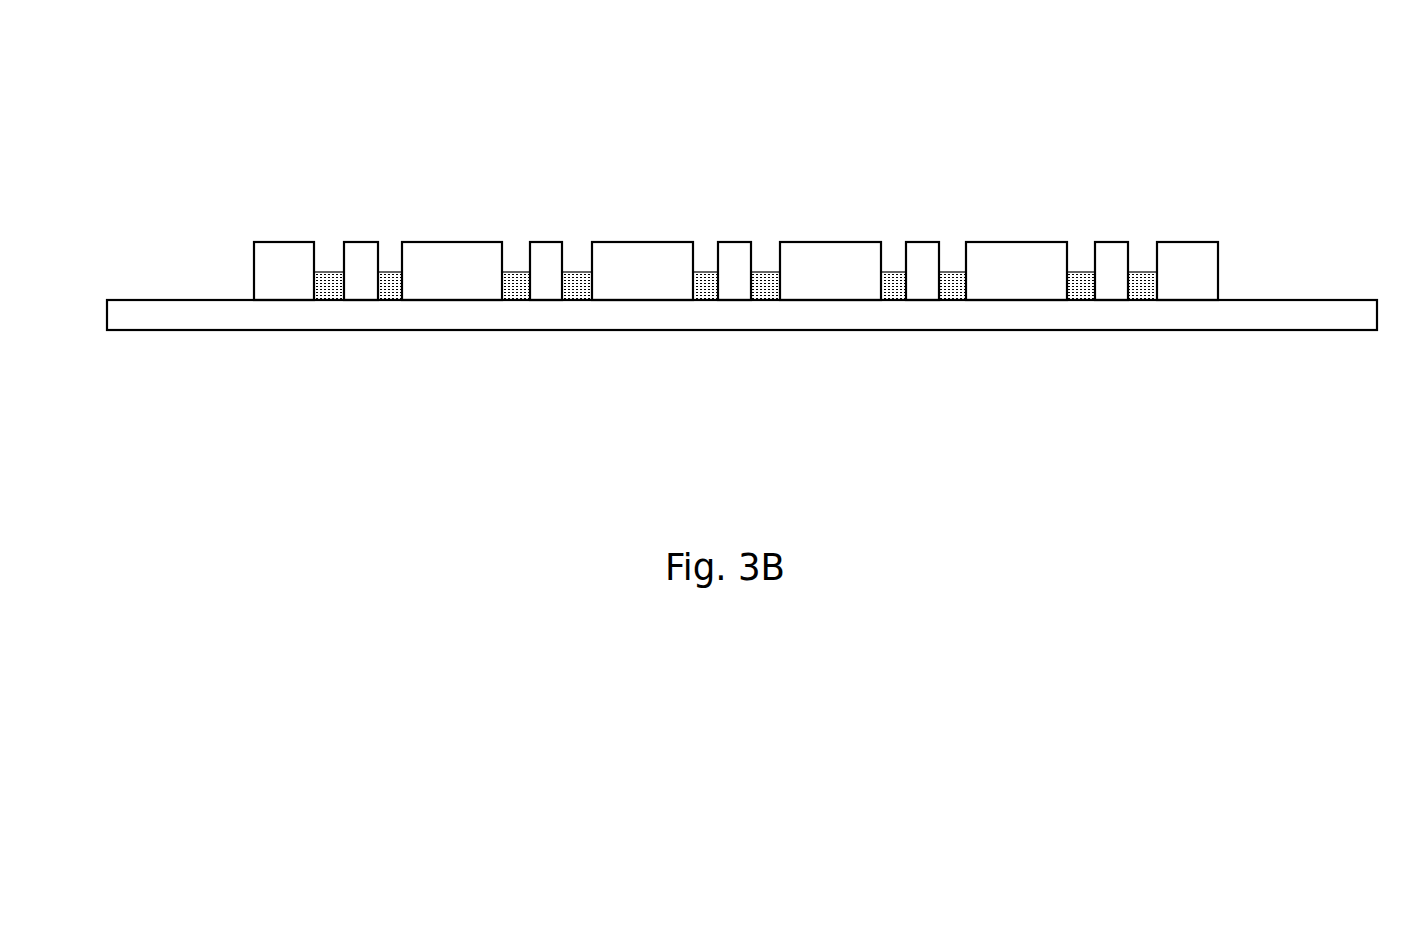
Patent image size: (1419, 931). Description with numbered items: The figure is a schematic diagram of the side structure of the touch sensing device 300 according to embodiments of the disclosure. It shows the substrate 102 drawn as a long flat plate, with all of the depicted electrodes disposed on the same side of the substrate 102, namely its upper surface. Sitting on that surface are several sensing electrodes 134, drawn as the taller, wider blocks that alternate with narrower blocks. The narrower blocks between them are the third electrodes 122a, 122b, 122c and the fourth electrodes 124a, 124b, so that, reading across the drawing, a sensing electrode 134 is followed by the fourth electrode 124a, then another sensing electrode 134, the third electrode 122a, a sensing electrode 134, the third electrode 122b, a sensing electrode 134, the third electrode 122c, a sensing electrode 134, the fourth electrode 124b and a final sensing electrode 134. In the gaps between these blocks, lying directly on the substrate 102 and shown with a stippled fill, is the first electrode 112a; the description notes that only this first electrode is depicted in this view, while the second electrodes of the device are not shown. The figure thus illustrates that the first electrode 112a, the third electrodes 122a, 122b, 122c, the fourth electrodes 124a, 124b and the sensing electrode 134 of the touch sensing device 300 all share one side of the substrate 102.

The touch sensing device 300 is at (180, 64).
The substrate 102 is at (120, 330).
The first electrode 112a is at (1145, 272).
The sensing electrode 134 is at (283, 241).
The fourth electrode 124a is at (359, 241).
The fourth electrode 124b is at (1110, 241).
The third electrode 122a is at (546, 241).
The third electrode 122b is at (730, 241).
The third electrode 122c is at (922, 241).